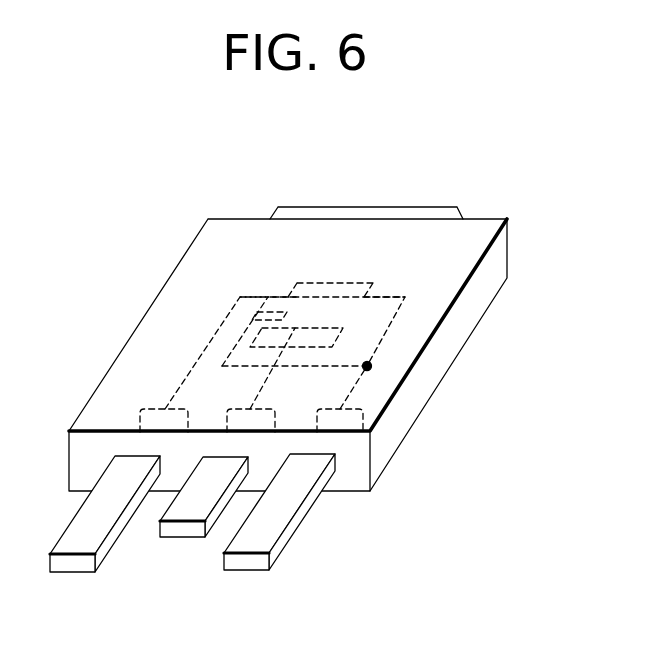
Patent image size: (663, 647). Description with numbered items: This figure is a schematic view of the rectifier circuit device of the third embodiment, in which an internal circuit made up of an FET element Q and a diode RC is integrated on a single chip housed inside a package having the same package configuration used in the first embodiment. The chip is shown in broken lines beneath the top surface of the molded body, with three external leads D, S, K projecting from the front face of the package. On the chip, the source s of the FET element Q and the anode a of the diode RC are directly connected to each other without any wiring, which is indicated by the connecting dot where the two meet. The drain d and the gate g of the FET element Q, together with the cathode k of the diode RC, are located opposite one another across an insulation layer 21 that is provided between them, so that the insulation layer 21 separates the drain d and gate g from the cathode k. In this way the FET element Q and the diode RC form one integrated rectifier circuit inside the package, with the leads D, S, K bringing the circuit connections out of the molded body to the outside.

The insulation layer 21 is at (332, 290).
The FET element Q is at (307, 256).
The diode RC is at (380, 262).
The drain d is at (300, 283).
The gate g is at (272, 312).
The source s is at (232, 367).
The cathode k is at (372, 296).
The anode a is at (345, 333).
The drain lead D is at (67, 566).
The source lead S is at (178, 532).
The cathode lead K is at (247, 562).